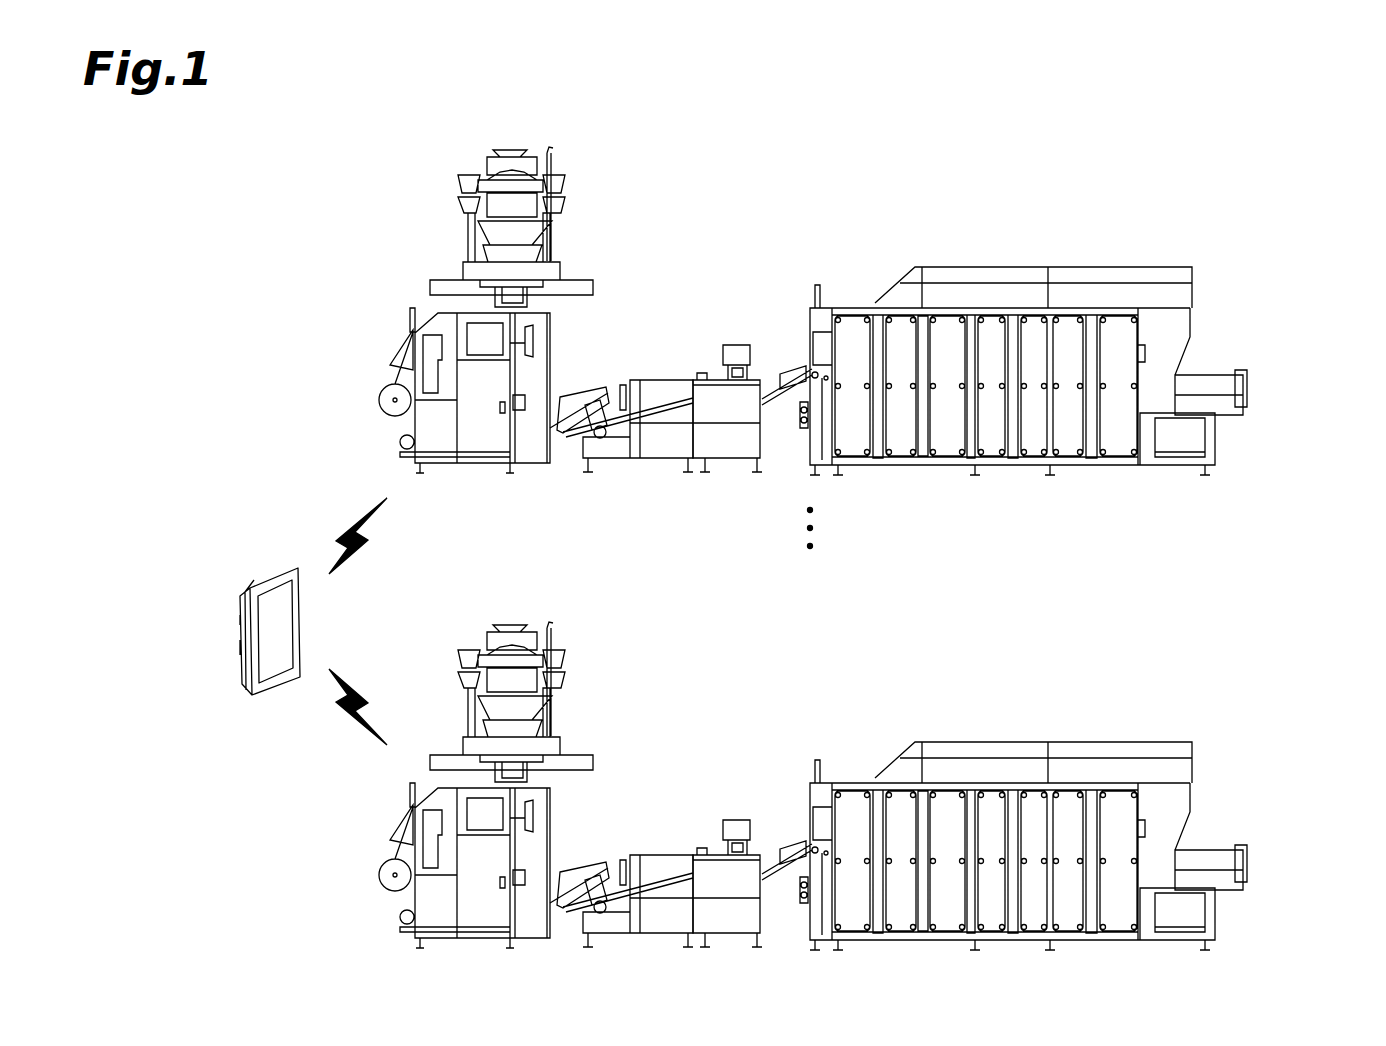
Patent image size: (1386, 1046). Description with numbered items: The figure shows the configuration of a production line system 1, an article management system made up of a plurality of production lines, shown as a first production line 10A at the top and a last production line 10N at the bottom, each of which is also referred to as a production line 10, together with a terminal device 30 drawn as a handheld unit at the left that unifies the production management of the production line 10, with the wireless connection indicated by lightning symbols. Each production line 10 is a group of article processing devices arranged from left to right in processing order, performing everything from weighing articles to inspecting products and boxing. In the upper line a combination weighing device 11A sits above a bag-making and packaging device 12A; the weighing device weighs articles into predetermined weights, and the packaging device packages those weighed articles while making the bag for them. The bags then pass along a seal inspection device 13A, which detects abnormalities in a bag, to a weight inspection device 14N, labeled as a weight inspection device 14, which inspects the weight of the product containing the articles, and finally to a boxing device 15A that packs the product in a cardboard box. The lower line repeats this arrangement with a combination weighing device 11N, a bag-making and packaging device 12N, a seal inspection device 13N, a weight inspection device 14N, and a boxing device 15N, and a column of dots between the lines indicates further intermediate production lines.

The production line system 1 is at (258, 176).
The production line 10 is at (872, 546).
The production line 10A is at (1247, 222).
The production line 10N is at (1247, 697).
The combination weighing device 11A is at (590, 213).
The combination weighing device 11N is at (590, 688).
The bag-making and packaging device 12A is at (572, 330).
The bag-making and packaging device 12N is at (572, 805).
The seal inspection device 13A is at (592, 363).
The seal inspection device 13N is at (592, 838).
The weight inspection device 14 is at (728, 805).
The weight inspection device 14N is at (728, 330).
The boxing device 15A is at (1057, 305).
The boxing device 15N is at (1057, 780).
The terminal device 30 is at (240, 636).